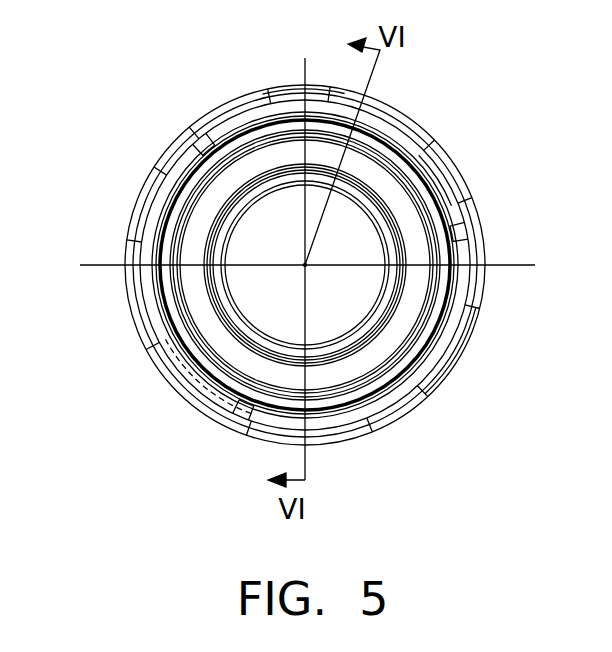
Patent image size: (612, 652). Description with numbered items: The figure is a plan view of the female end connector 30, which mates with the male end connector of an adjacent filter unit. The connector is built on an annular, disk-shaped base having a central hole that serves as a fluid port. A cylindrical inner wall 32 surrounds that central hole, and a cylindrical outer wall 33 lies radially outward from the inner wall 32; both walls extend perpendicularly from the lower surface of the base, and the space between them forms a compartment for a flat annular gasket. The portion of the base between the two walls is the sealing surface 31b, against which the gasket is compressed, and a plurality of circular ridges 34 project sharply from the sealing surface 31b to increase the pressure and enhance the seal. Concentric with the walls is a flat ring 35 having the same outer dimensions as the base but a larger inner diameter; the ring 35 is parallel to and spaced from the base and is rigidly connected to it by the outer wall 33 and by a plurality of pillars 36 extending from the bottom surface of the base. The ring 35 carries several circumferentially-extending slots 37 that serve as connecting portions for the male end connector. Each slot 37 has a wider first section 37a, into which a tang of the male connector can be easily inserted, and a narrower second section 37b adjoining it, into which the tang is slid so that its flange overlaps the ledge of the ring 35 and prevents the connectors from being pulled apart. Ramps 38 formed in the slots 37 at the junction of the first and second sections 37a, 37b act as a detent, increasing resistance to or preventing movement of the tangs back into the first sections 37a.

The female end connector 30 is at (207, 90).
The sealing surface 31b is at (197, 230).
The inner wall 32 is at (233, 302).
The outer wall 33 is at (177, 337).
The circular ridges 34 is at (428, 382).
The ring 35 is at (368, 121).
The pillars 36 is at (330, 85).
The slots 37 is at (183, 152).
The first section 37a is at (163, 193).
The second section 37b is at (272, 106).
The ramps 38 is at (200, 143).